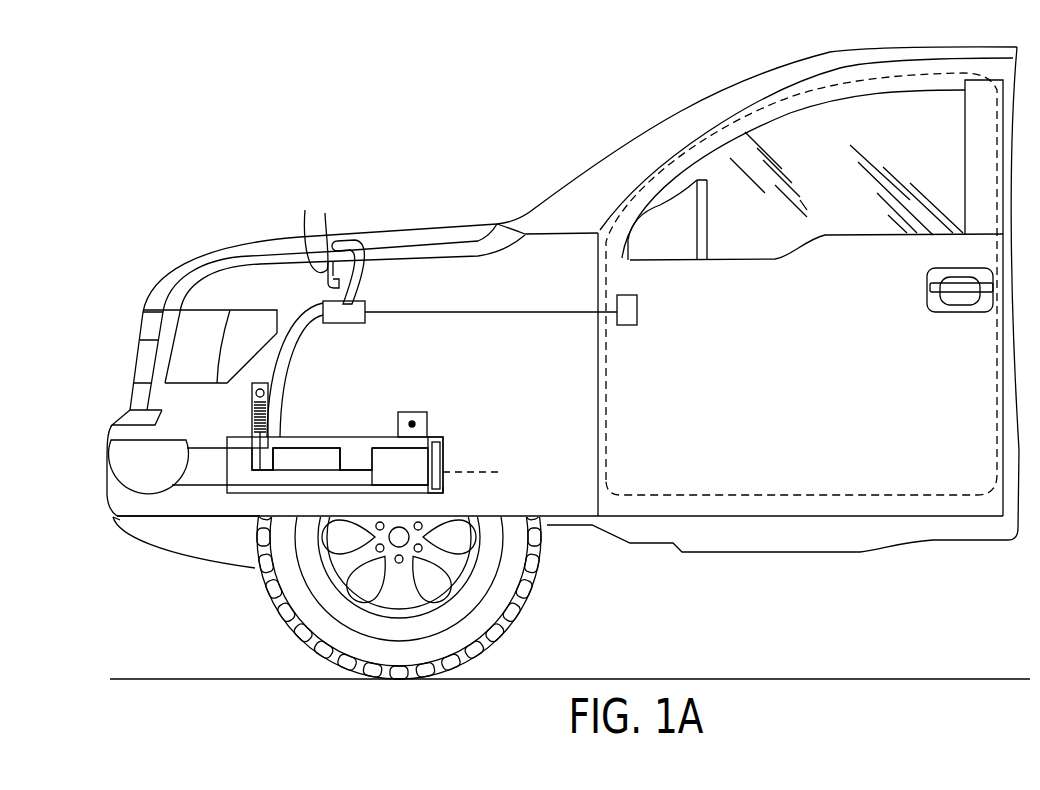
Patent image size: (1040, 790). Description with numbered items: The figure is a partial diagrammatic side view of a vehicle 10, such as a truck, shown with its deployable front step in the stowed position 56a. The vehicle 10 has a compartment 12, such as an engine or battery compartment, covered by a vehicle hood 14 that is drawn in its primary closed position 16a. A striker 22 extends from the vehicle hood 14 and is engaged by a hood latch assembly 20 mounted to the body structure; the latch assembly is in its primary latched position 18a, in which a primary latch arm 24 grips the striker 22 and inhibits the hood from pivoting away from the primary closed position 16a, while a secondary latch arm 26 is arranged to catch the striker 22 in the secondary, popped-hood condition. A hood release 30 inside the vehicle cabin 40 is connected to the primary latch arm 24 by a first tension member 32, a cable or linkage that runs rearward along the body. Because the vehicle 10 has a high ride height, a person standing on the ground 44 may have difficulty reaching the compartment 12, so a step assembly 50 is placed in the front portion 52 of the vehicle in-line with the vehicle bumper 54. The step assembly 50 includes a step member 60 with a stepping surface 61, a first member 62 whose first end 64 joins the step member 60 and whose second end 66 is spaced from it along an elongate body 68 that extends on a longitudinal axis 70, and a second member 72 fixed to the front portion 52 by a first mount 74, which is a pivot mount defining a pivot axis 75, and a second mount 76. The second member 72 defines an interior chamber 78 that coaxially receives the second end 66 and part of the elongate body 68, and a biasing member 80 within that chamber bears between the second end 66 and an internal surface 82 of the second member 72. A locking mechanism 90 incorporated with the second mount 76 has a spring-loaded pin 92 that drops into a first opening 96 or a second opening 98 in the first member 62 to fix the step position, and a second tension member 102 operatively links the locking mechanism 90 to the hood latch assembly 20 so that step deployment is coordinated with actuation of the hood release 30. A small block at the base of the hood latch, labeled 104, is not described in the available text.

The vehicle 10 is at (263, 188).
The compartment 12 is at (548, 478).
The vehicle hood 14 is at (317, 238).
The primary closed position 16a is at (153, 266).
The primary latched position 18a is at (289, 276).
The hood latch assembly 20 is at (283, 289).
The striker 22 is at (313, 232).
The primary latch arm 24 is at (327, 287).
The secondary latch arm 26 is at (364, 282).
The hood release 30 is at (640, 312).
The first tension member 32 is at (527, 314).
The vehicle cabin 40 is at (960, 497).
The ground 44 is at (172, 677).
The step assembly 50 is at (93, 472).
The front portion 52 is at (192, 525).
The vehicle bumper 54 is at (112, 520).
The stowed position 56a is at (170, 498).
The step member 60 is at (107, 458).
The stepping surface 61 is at (115, 424).
The first member 62 is at (187, 440).
The first end 64 is at (190, 466).
The second end 66 is at (431, 468).
The elongate body 68 is at (299, 478).
The longitudinal axis 70 is at (488, 470).
The second member 72 is at (355, 423).
The first mount 74 is at (407, 410).
The pivot axis 75 is at (395, 420).
The second mount 76 is at (276, 428).
The interior chamber 78 is at (238, 488).
The biasing member 80 is at (433, 436).
The internal surface 82 is at (445, 487).
The locking mechanism 90 is at (244, 424).
The spring-loaded pin 92 is at (257, 386).
The first opening 96 is at (260, 460).
The second opening 98 is at (360, 458).
The second tension member 102 is at (290, 357).
The controller 104 is at (310, 322).